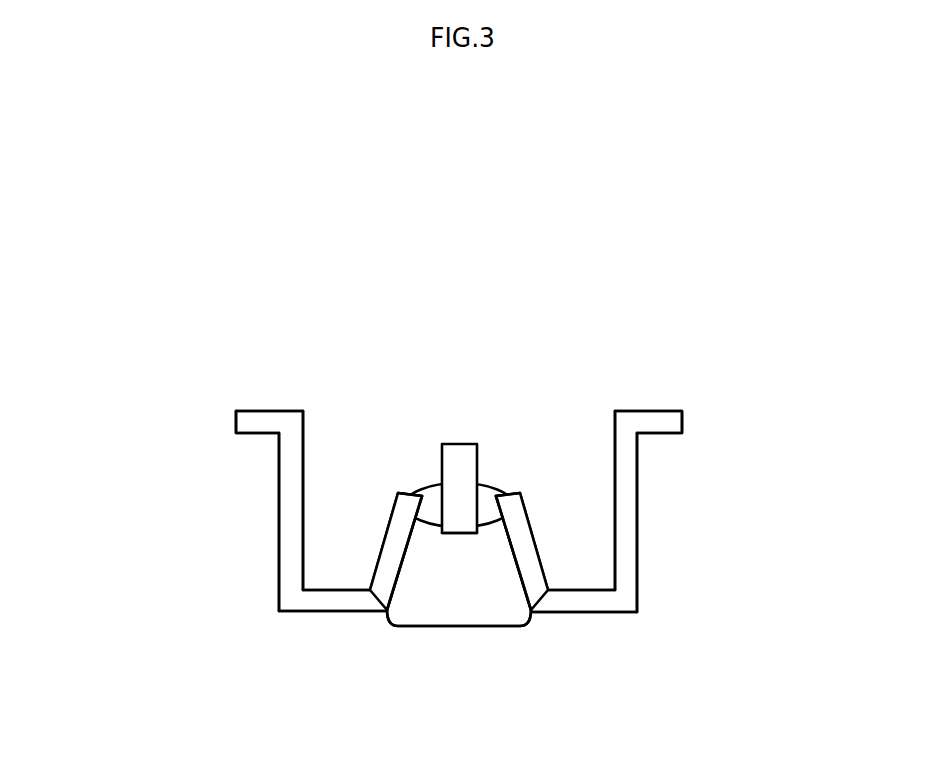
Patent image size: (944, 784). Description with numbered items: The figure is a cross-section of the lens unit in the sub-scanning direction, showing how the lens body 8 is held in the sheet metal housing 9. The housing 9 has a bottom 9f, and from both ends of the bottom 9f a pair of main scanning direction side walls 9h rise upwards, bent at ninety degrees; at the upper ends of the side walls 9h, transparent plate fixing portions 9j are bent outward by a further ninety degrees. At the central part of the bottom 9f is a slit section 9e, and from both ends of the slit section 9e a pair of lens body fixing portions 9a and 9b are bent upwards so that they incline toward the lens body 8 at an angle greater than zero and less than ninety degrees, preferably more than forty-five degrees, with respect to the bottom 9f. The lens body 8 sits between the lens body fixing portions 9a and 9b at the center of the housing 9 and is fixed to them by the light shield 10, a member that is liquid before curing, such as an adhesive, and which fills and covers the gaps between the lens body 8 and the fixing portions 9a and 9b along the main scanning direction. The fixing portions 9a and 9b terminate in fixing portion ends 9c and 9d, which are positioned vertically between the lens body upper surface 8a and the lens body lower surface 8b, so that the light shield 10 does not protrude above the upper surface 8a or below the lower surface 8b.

The lens body 8 is at (460, 462).
The lens body upper surface 8a is at (453, 483).
The lens body lower surface 8b is at (452, 533).
The housing 9 is at (623, 595).
The lens body fixing portion 9a is at (516, 514).
The lens body fixing portion 9b is at (400, 490).
The fixing portion end 9c is at (513, 492).
The fixing portion end 9d is at (405, 510).
The slit section 9e is at (468, 632).
The bottom 9f is at (303, 613).
The main scanning direction side wall 9h is at (293, 512).
The transparent plate fixing portion 9j is at (278, 410).
The light shield 10 is at (433, 513).